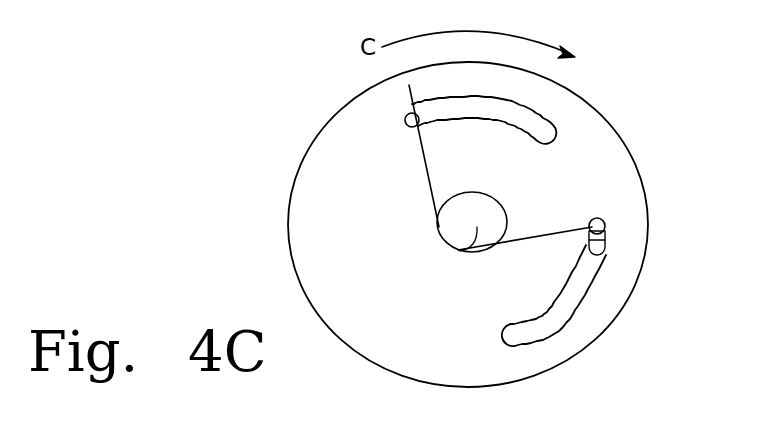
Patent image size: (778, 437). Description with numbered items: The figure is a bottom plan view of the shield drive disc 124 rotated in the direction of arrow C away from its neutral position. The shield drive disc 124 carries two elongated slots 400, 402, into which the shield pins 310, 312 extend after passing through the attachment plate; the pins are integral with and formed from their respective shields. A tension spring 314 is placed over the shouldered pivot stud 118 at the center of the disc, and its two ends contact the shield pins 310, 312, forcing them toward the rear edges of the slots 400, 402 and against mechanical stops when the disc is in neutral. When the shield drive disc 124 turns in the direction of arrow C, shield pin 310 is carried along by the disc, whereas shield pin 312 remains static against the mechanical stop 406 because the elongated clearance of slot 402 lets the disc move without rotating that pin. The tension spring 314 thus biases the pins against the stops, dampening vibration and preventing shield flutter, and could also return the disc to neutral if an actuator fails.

The shield drive disc 124 is at (347, 104).
The slot 400 is at (553, 121).
The shield pin 310 is at (404, 126).
The tension spring 314 is at (426, 184).
The shouldered pivot stud 118 is at (458, 251).
The shield pin 312 is at (610, 228).
The mechanical stop 406 is at (600, 259).
The slot 402 is at (552, 327).